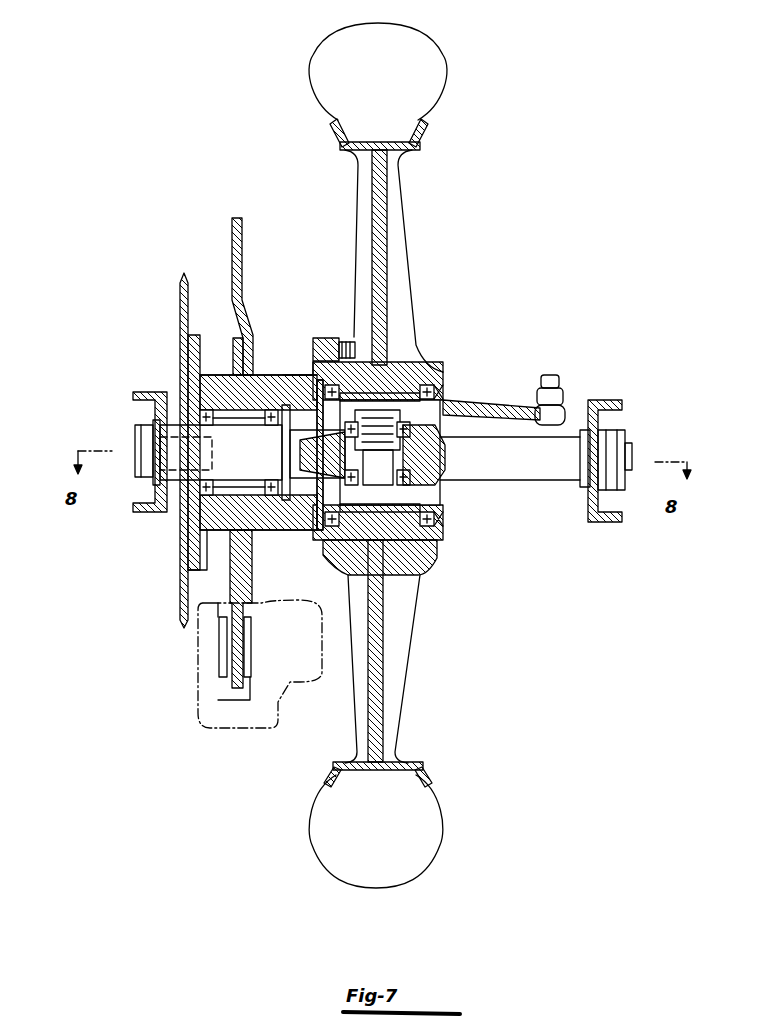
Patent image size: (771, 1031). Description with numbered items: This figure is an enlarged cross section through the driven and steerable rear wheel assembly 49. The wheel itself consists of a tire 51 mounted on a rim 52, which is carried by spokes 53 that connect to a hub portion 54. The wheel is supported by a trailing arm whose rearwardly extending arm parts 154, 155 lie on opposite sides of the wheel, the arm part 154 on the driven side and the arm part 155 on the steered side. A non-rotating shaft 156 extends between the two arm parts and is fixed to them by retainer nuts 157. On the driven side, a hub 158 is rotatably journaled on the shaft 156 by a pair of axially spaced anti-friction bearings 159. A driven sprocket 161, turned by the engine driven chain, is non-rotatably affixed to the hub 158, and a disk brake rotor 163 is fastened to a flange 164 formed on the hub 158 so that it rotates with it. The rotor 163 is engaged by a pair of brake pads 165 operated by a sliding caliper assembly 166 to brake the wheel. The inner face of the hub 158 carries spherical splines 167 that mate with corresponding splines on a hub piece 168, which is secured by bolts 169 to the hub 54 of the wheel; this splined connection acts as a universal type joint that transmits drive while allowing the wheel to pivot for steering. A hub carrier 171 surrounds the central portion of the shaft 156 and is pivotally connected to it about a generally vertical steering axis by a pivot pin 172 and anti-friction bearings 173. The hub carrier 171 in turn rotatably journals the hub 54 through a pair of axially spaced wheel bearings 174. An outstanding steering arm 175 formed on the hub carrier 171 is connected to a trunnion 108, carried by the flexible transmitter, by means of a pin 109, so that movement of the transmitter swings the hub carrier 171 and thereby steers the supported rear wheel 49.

The rear wheel assembly 49 is at (433, 203).
The tire 51 is at (445, 66).
The rim 52 is at (421, 147).
The spokes 53 is at (388, 252).
The hub portion 54 is at (405, 372).
The trunnion 108 is at (565, 386).
The pin 109 is at (551, 374).
The arm part 154 is at (146, 393).
The arm part 155 is at (608, 400).
The non-rotating shaft 156 is at (550, 476).
The retainer nuts 157 is at (140, 427).
The hub 158 is at (280, 374).
The anti-friction bearings 159 is at (305, 498).
The driven sprocket 161 is at (179, 596).
The disk brake rotor 163 is at (232, 254).
The flange 164 is at (232, 343).
The brake pads 165 is at (247, 655).
The sliding caliper assembly 166 is at (214, 730).
The spherical splines 167 is at (296, 374).
The hub piece 168 is at (305, 498).
The bolts 169 is at (352, 338).
The hub carrier 171 is at (440, 498).
The pivot pin 172 is at (420, 470).
The anti-friction bearings 173 is at (330, 444).
The wheel bearings 174 is at (312, 541).
The steering arm 175 is at (512, 408).